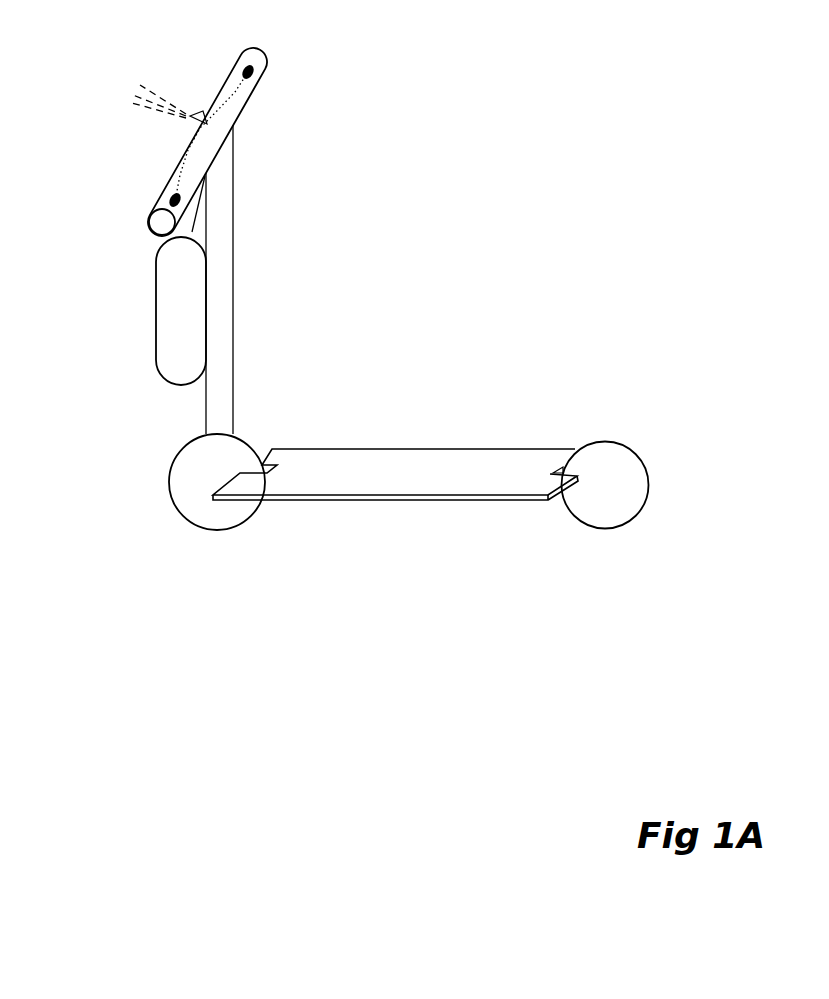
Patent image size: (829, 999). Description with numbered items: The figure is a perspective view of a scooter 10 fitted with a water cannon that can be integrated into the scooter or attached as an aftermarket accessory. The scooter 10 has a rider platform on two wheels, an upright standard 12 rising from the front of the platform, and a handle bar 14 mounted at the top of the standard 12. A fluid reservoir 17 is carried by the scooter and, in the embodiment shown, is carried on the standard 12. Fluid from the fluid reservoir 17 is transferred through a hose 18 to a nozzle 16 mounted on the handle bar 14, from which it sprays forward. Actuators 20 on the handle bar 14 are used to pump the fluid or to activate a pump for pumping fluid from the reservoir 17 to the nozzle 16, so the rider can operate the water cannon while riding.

The scooter 10 is at (452, 448).
The standard 12 is at (233, 247).
The handle bar 14 is at (245, 103).
The nozzle 16 is at (196, 116).
The fluid reservoir 17 is at (156, 322).
The hose 18 is at (192, 232).
The actuators 20 is at (260, 68).